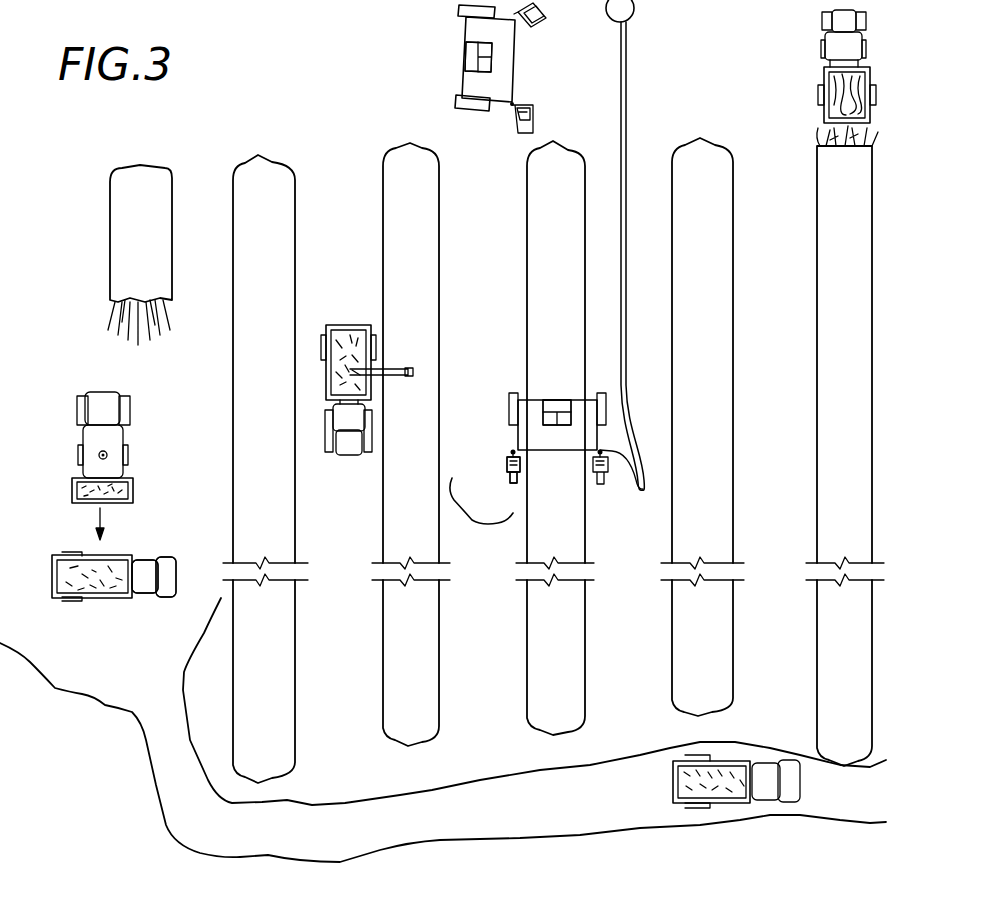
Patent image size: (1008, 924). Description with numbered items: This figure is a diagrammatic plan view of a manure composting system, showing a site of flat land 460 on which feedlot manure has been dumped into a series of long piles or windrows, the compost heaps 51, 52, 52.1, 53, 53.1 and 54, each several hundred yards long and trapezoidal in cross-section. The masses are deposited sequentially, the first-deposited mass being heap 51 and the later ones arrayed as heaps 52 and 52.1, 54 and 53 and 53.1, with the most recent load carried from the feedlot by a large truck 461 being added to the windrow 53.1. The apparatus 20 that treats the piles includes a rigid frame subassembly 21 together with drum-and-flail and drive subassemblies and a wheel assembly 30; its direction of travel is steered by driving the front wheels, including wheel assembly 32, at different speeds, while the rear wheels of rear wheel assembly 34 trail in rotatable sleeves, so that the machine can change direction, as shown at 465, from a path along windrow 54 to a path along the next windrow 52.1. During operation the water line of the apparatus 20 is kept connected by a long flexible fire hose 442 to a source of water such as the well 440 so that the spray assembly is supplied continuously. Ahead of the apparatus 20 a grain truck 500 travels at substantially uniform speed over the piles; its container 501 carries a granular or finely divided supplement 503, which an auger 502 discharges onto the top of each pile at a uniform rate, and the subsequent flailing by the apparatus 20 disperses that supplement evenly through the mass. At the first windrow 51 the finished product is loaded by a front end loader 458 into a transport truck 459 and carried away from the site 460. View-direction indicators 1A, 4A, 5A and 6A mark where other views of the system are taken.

The view direction of FIG. 1A (tractor) 1A is at (462, 57).
The view direction of FIG. 4A is at (592, 497).
The view direction of FIG. 5A is at (500, 423).
The view direction of FIG. 6A is at (552, 200).
The apparatus 20 is at (578, 395).
The rigid frame subassembly 21 is at (540, 405).
The wheel assembly 30 is at (481, 510).
The wheel assembly 32 is at (513, 428).
The rear wheel assembly 34 is at (513, 485).
The compost heap 51 is at (122, 168).
The compost heap 52 is at (258, 162).
The compost heap 52.1 is at (436, 160).
The compost heap 53 is at (672, 162).
The compost heap 53.1 is at (817, 163).
The compost heap 54 is at (556, 155).
The well 440 is at (632, 13).
The flexible fire hose 442 is at (628, 98).
The front end loader 458 is at (127, 466).
The transport truck 459 is at (145, 598).
The site of flat land 460 is at (501, 308).
The truck 461 is at (821, 44).
The change of direction 465 is at (466, 45).
The grain truck 500 is at (345, 448).
The container 501 is at (368, 325).
The auger 502 is at (381, 370).
The supplement 503 is at (345, 360).